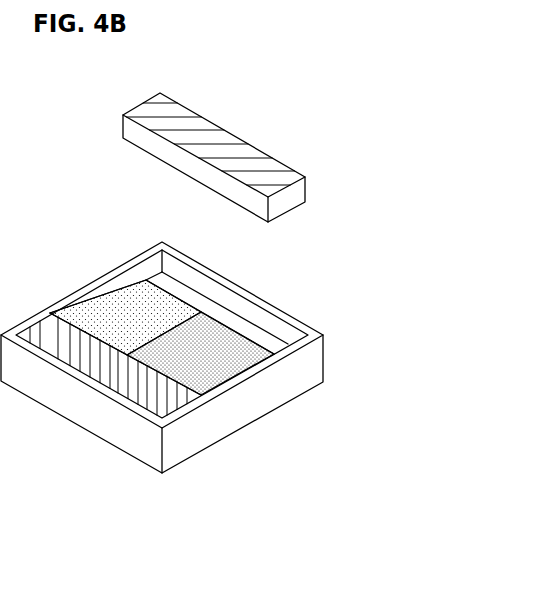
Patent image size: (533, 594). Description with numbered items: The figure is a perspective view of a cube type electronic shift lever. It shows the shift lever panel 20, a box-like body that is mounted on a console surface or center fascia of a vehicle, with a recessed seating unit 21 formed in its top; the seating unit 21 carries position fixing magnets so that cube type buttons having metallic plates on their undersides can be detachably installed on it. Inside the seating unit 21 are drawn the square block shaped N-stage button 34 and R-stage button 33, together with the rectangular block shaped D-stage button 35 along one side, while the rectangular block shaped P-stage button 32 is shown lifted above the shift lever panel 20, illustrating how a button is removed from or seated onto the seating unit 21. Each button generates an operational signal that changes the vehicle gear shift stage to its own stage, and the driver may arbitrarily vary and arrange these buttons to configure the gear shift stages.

The shift lever panel 20 is at (197, 435).
The seating unit 21 is at (243, 330).
The P-stage button 32 is at (209, 137).
The R-stage button 33 is at (232, 368).
The N-stage button 34 is at (115, 298).
The D-stage button 35 is at (115, 372).